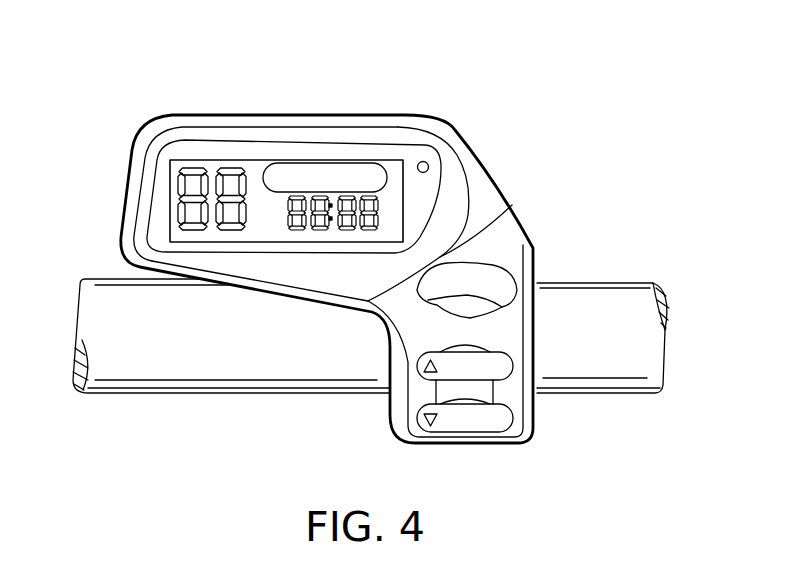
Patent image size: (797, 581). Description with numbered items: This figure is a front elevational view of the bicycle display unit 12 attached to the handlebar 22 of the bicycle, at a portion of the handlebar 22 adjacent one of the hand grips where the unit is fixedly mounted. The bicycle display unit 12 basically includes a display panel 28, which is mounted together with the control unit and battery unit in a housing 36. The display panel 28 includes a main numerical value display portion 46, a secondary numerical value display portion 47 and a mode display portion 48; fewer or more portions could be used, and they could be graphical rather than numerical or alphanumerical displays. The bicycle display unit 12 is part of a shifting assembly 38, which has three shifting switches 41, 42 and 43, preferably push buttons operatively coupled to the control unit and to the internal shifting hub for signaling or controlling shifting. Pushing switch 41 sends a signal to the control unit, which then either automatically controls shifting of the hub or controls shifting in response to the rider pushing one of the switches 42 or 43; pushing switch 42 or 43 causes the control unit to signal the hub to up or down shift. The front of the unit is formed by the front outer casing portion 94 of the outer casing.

The bicycle display unit 12 is at (536, 83).
The handlebar 22 is at (197, 394).
The display panel 28 is at (396, 158).
The housing 36 is at (497, 177).
The shifting assembly 38 is at (531, 441).
The shifting switch 41 is at (508, 263).
The shifting switch 42 is at (513, 357).
The shifting switch 43 is at (513, 418).
The main numerical value display portion 46 is at (177, 188).
The secondary numerical value display portion 47 is at (342, 229).
The mode display portion 48 is at (314, 171).
The front outer casing portion 94 is at (277, 274).